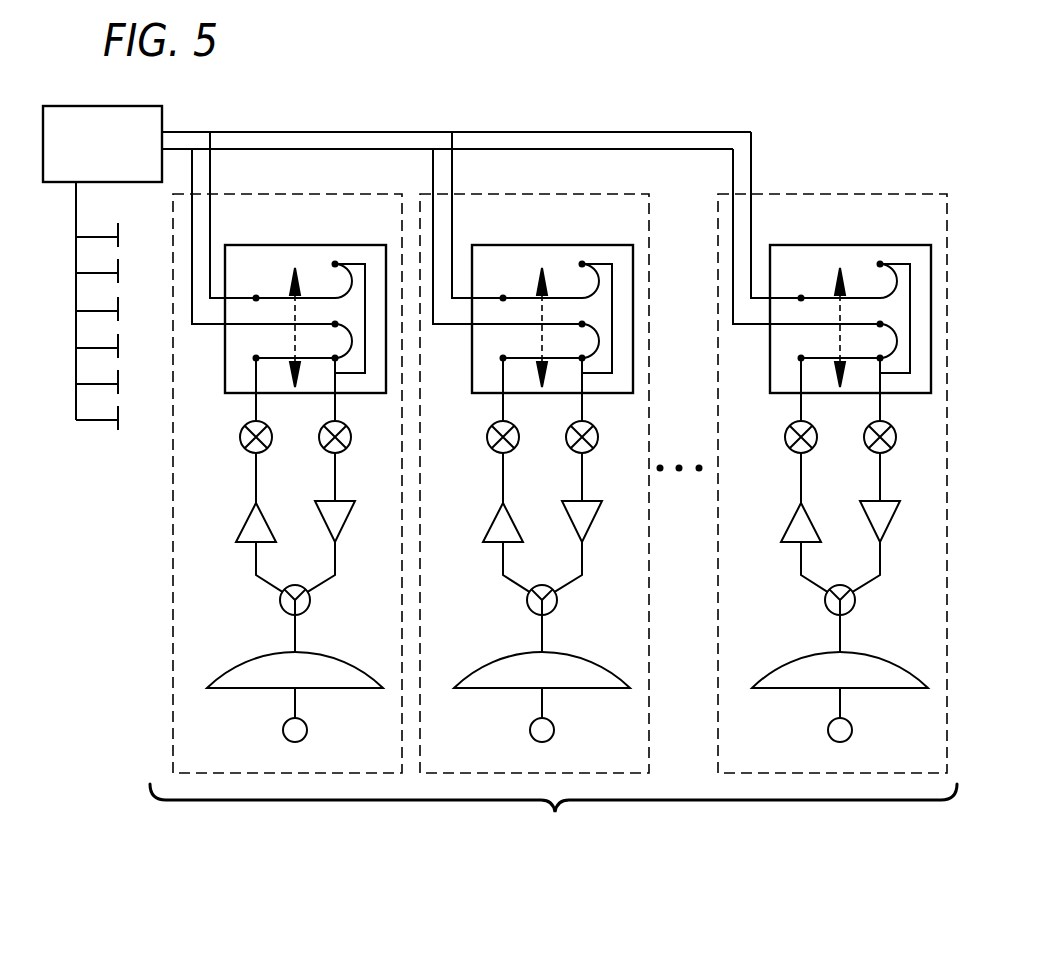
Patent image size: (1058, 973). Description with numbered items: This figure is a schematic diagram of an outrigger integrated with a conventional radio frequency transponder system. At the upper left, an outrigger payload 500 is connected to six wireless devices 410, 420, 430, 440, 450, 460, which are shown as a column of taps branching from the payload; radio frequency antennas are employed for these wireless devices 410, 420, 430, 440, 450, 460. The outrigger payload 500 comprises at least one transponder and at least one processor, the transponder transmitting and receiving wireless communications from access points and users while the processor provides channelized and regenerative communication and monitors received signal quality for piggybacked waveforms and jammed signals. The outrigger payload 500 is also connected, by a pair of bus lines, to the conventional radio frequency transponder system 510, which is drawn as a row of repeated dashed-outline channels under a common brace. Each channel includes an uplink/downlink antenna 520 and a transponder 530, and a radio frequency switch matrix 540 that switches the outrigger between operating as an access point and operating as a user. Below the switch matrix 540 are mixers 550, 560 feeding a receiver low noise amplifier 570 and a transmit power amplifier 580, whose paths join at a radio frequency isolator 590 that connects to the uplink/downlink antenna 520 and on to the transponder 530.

The outrigger payload 500 is at (162, 113).
The wireless device 410 is at (159, 249).
The wireless device 420 is at (159, 285).
The wireless device 430 is at (159, 323).
The wireless device 440 is at (159, 360).
The wireless device 450 is at (159, 396).
The wireless device 460 is at (159, 432).
The radio frequency transponder system 510 is at (553, 488).
The uplink/downlink antenna 520 is at (308, 680).
The transponder 530 is at (283, 732).
The radio frequency switch matrix 540 is at (318, 236).
The mixer 550 is at (238, 437).
The mixer 560 is at (317, 437).
The receiver low noise amplifier 570 is at (240, 523).
The transmit power amplifier 580 is at (342, 522).
The radio frequency isolator 590 is at (280, 610).